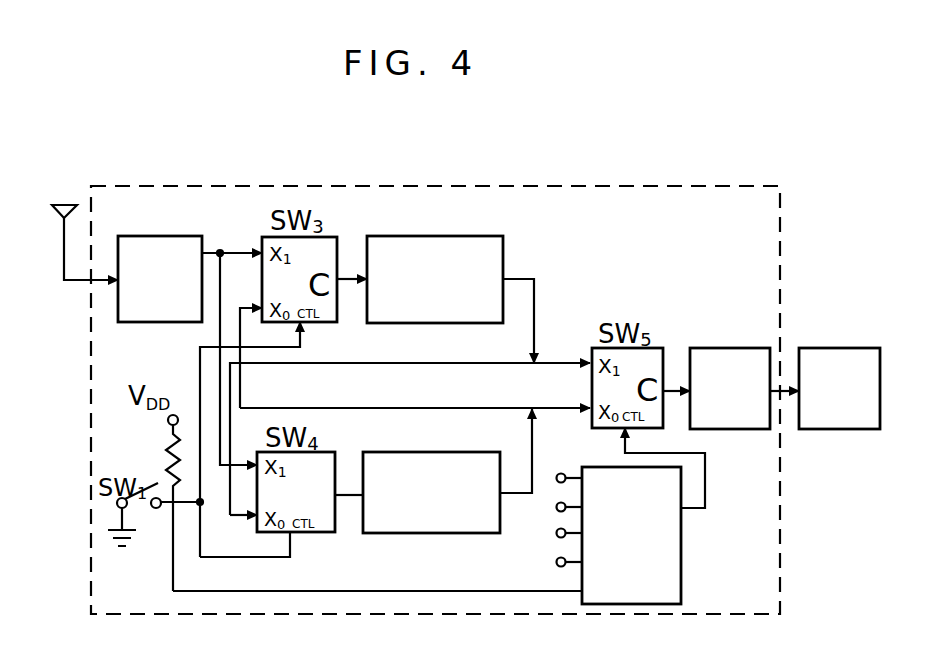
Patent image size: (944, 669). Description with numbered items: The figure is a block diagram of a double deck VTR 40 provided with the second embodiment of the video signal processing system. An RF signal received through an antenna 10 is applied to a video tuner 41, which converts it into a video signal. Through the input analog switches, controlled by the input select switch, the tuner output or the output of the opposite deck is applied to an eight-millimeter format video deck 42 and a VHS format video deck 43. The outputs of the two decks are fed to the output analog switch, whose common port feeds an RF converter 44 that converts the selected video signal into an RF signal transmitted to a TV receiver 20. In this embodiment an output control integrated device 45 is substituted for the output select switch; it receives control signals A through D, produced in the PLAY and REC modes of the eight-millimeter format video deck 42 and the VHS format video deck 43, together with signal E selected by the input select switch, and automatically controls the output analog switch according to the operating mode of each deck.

The antenna 10 is at (63, 205).
The TV receiver 20 is at (839, 388).
The double deck VTR 40 is at (746, 193).
The video tuner 41 is at (160, 279).
The 8 mm format video deck 42 is at (435, 279).
The VHS format video deck 43 is at (431, 492).
The RF converter 44 is at (730, 388).
The output control integrated device 45 is at (619, 537).